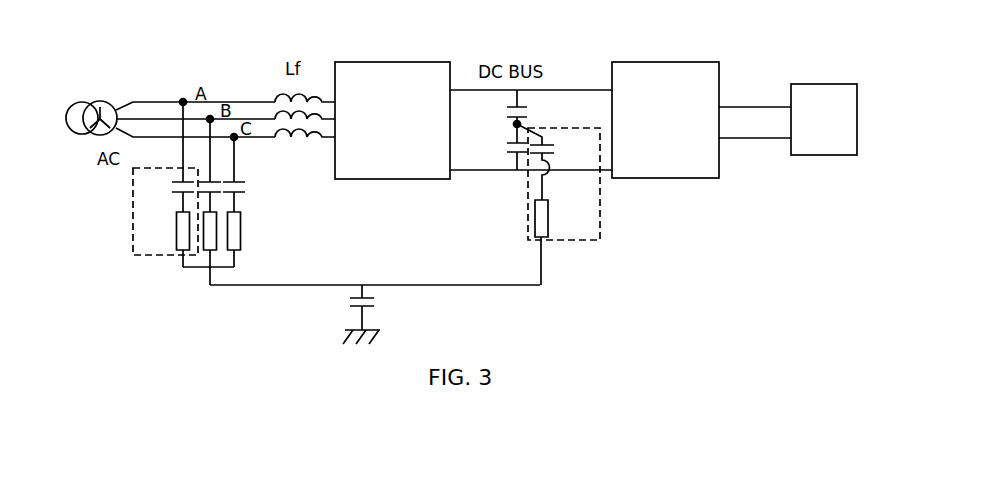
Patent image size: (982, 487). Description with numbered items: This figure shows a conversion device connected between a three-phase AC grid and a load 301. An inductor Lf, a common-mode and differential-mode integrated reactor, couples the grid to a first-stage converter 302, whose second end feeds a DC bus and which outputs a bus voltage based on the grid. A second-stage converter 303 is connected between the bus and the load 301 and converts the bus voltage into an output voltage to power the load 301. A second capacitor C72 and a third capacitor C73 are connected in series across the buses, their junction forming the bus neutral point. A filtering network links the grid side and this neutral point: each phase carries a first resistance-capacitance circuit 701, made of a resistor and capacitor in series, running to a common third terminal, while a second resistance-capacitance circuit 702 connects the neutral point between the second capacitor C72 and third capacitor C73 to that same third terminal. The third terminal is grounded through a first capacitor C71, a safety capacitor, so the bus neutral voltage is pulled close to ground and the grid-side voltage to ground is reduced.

The load 301 is at (803, 83).
The first-stage converter 302 is at (452, 82).
The second-stage converter 303 is at (721, 82).
The first resistance-capacitance circuit 701 is at (132, 212).
The second resistance-capacitance circuit 702 is at (602, 182).
The first capacitor C71 is at (342, 314).
The second capacitor C72 is at (493, 116).
The third capacitor C73 is at (493, 153).